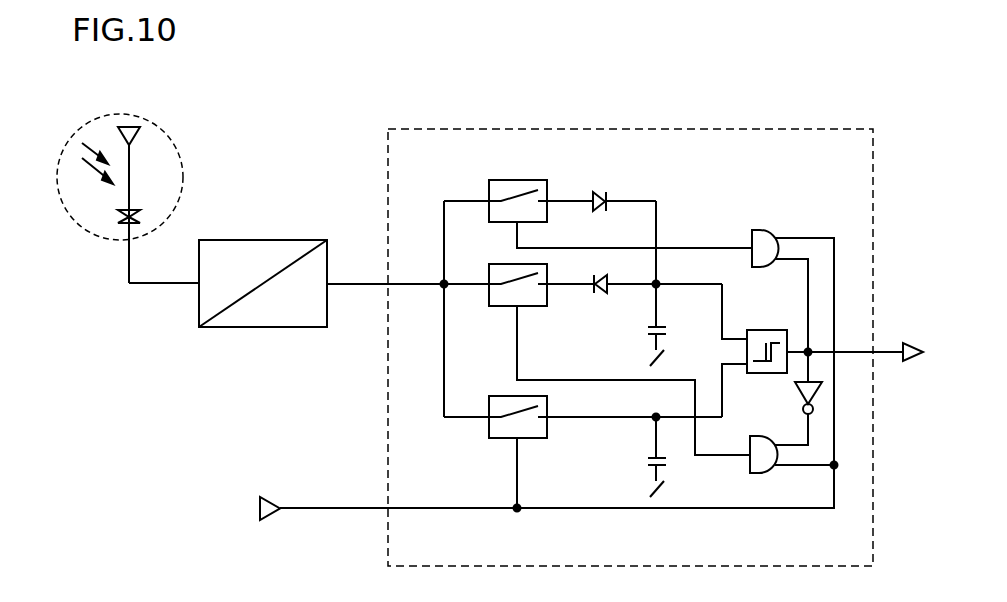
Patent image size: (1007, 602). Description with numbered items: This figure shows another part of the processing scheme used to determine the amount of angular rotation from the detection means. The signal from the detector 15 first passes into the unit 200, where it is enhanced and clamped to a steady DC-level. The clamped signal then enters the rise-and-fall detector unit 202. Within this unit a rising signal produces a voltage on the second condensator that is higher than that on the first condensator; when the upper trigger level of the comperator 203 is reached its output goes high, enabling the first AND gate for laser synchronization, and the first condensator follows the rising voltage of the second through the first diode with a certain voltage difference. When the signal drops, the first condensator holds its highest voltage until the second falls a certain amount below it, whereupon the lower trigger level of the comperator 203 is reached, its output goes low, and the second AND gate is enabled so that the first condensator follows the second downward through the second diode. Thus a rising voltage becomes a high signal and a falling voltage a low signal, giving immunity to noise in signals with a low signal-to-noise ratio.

The detector 15 is at (82, 260).
The unit 200 is at (237, 318).
The rise-and-fall detector unit 202 is at (388, 435).
The comperator 203 is at (777, 331).